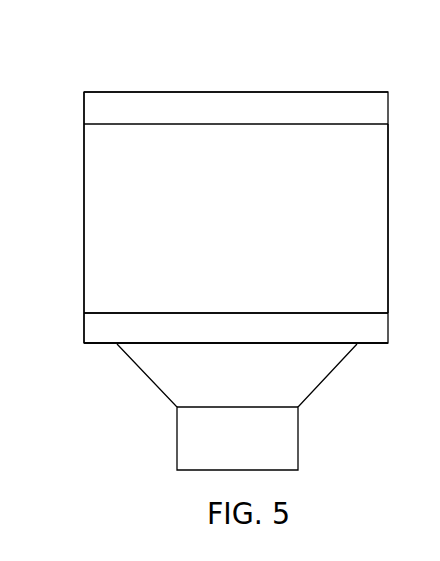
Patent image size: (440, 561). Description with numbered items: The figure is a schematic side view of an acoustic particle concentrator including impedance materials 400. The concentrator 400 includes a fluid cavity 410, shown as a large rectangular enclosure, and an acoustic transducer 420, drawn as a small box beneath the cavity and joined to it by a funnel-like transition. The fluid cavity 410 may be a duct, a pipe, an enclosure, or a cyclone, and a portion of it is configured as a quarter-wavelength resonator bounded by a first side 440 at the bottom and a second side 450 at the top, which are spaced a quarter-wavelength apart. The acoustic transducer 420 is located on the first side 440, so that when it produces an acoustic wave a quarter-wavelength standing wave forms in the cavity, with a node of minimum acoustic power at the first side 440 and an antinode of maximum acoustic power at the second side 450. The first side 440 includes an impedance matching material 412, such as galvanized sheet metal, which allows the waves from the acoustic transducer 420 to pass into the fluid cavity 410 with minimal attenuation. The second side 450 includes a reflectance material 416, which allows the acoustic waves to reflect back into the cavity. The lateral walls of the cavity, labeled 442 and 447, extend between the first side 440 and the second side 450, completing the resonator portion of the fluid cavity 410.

The acoustic particle concentrator including impedance materials 400 is at (313, 44).
The reflectance material 416 is at (375, 92).
The second side 450 is at (236, 119).
The fluid cavity 410 is at (96, 122).
The left side wall 442 is at (86, 240).
The right side wall 447 is at (386, 240).
The first side 440 is at (164, 318).
The impedance matching material 412 is at (377, 344).
The acoustic transducer 420 is at (175, 438).